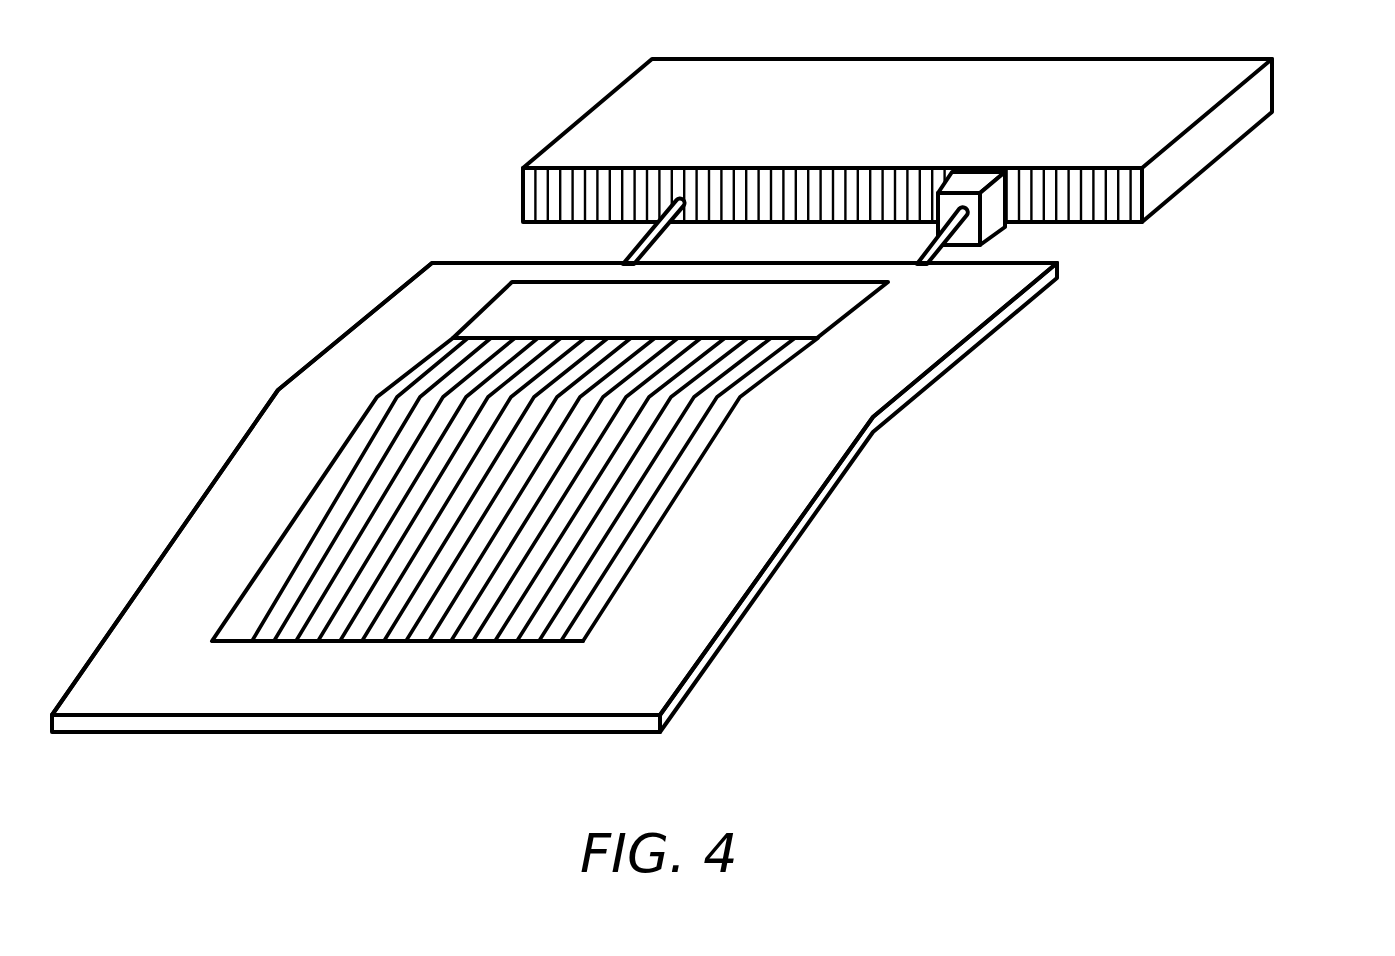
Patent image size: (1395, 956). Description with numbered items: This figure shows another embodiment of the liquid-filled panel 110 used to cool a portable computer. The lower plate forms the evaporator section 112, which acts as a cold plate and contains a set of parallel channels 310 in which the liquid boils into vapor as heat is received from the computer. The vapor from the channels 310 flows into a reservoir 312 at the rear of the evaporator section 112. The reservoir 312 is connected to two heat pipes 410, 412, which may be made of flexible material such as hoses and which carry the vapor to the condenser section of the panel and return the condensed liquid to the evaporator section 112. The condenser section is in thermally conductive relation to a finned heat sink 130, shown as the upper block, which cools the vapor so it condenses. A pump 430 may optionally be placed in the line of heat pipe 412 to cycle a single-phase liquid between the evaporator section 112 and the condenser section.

The liquid-filled panel 110 is at (639, 697).
The evaporator section 112 is at (342, 362).
The heat sink 130 is at (1275, 83).
The channels 310 is at (236, 633).
The reservoir 312 is at (850, 312).
The heat pipe 410 is at (615, 256).
The heat pipe 412 is at (912, 255).
The pump 430 is at (990, 168).